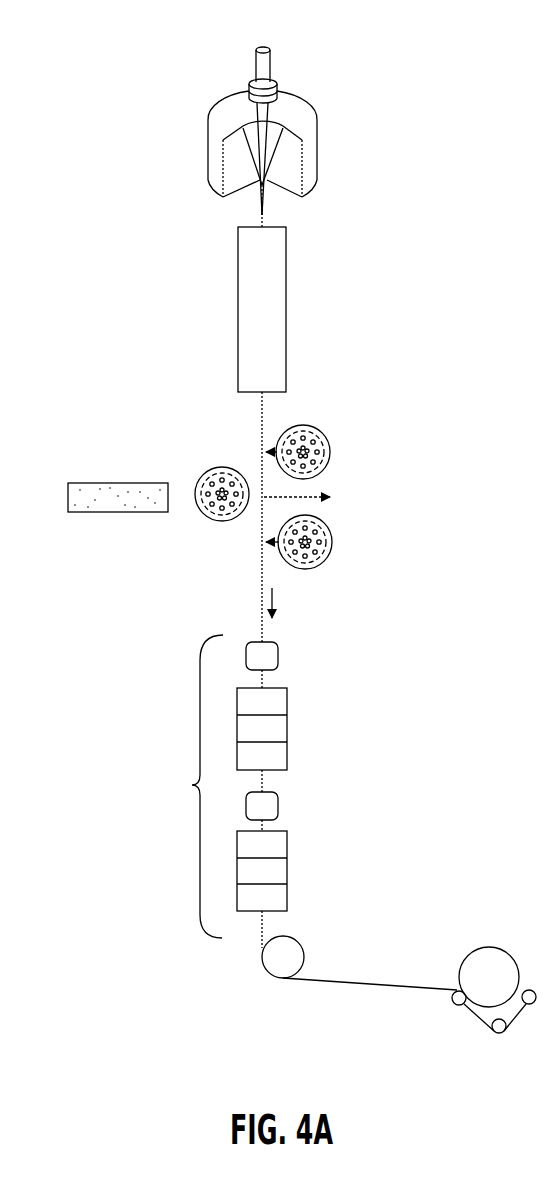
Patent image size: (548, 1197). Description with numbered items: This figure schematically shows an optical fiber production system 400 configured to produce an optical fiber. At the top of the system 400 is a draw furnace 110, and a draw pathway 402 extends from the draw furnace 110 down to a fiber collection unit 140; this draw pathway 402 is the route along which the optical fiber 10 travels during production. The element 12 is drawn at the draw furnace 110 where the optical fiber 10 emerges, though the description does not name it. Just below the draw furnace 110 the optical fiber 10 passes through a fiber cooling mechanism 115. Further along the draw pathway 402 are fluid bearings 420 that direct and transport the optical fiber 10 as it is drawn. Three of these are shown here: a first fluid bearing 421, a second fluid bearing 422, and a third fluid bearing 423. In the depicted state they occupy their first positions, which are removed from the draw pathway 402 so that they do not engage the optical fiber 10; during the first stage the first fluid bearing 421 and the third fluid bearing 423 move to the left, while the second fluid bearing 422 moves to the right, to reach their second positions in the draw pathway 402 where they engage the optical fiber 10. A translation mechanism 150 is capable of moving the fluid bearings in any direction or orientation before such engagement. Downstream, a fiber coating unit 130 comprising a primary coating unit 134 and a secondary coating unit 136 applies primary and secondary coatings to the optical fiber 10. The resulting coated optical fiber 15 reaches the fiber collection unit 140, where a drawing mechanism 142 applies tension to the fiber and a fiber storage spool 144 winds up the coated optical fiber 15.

The optical fiber production system 400 is at (368, 62).
The polymer melt stream 12 is at (268, 118).
The draw furnace 110 is at (316, 122).
The optical fiber 10 is at (258, 215).
The fiber cooling mechanism 115 is at (278, 294).
The first fluid bearing 421 is at (323, 434).
The second fluid bearing 422 is at (218, 470).
The fluid bearings 420 is at (199, 484).
The third fluid bearing 423 is at (329, 533).
The translation mechanism 150 is at (75, 483).
The draw pathway 402 is at (257, 603).
The fiber coating unit 130 is at (192, 785).
The primary coating unit 134 is at (277, 731).
The secondary coating unit 136 is at (277, 867).
The coated optical fiber 15 is at (256, 935).
The fiber storage spool 144 is at (477, 970).
The drawing mechanism 142 is at (283, 962).
The fiber collection unit 140 is at (374, 992).